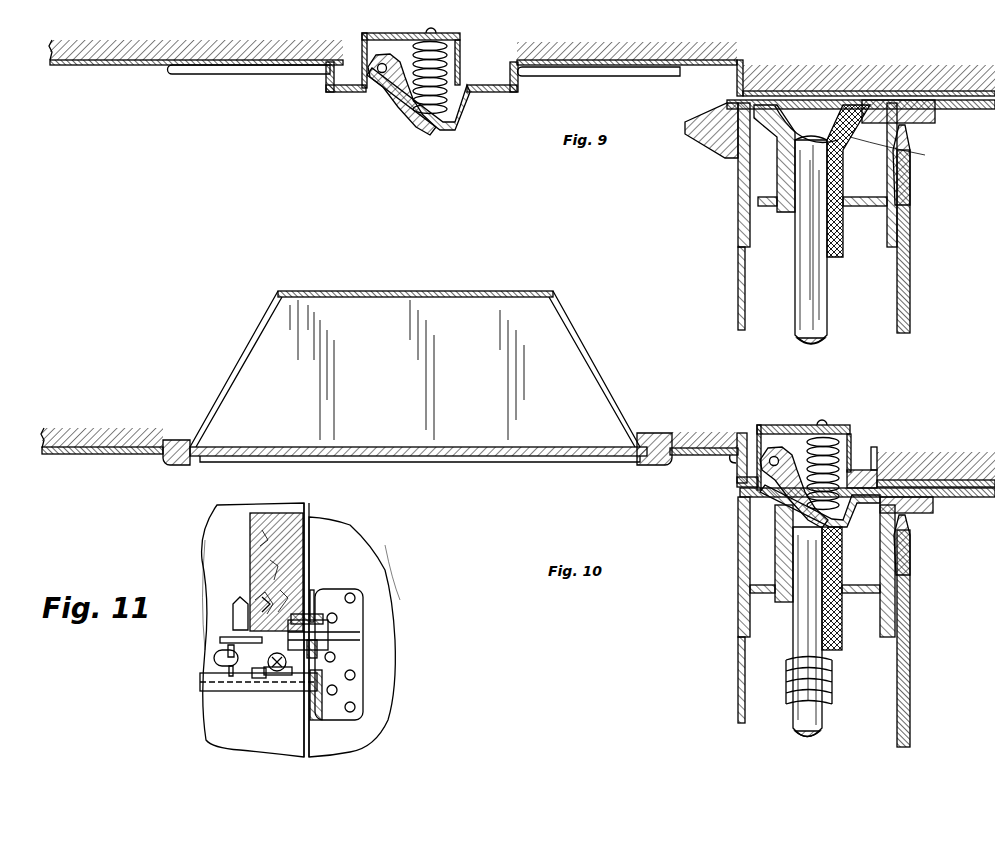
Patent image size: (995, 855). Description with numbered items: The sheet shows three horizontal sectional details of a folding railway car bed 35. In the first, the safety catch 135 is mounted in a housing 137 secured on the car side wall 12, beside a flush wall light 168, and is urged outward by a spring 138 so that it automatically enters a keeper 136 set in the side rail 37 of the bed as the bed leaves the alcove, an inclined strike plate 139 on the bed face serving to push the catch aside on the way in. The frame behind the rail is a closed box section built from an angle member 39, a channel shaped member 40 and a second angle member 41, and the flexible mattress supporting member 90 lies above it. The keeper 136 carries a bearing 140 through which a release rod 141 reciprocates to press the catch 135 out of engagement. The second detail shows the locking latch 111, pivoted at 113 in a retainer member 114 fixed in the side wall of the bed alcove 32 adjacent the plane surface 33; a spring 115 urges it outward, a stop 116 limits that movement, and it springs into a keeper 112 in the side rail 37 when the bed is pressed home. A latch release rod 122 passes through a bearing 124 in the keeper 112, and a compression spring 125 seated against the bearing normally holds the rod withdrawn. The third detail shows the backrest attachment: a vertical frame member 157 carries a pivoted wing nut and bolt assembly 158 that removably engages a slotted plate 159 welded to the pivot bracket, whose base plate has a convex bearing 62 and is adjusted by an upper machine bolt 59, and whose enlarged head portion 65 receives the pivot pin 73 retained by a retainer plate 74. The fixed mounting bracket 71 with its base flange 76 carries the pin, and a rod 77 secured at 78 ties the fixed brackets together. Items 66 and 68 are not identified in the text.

In FIG. 9, the side wall 12 is at (118, 66).
In FIG. 10, the side wall 12 is at (124, 456).
In FIG. 9, the wall light 168 is at (214, 76).
In FIG. 10, the wall light 168 is at (418, 376).
In FIG. 9, the housing 137 is at (352, 95).
In FIG. 9, the safety catch 135 is at (420, 128).
In FIG. 9, the spring 138 is at (462, 113).
In FIG. 9, the side rail member 37 is at (950, 98).
In FIG. 10, the side rail member 37 is at (738, 493).
In FIG. 9, the second angle member 41 is at (935, 121).
In FIG. 10, the second angle member 41 is at (935, 508).
In FIG. 9, the inclined strike plate 139 is at (722, 152).
In FIG. 9, the bed 35 is at (737, 215).
In FIG. 10, the bed 35 is at (735, 513).
In FIG. 11, the bed 35 is at (212, 558).
In FIG. 9, the angle member 39 is at (778, 166).
In FIG. 10, the angle member 39 is at (775, 550).
In FIG. 9, the channel shaped member 40 is at (868, 206).
In FIG. 10, the channel shaped member 40 is at (864, 594).
In FIG. 9, the bearing 140 is at (841, 255).
In FIG. 9, the release rod 141 is at (829, 297).
In FIG. 9, the flexible mattress supporting member 90 is at (910, 271).
In FIG. 10, the flexible mattress supporting member 90 is at (910, 596).
In FIG. 9, the keeper 136 is at (910, 156).
In FIG. 10, the pivot 113 is at (766, 456).
In FIG. 10, the retainer member 114 is at (836, 442).
In FIG. 10, the spring 115 is at (850, 450).
In FIG. 10, the latch 111 is at (877, 470).
In FIG. 10, the stop 116 is at (880, 481).
In FIG. 10, the plane surface 33 is at (737, 467).
In FIG. 11, the plane surface 33 is at (388, 596).
In FIG. 10, the bed alcove 32 is at (740, 483).
In FIG. 11, the bed alcove 32 is at (310, 535).
In FIG. 10, the keeper 112 is at (863, 516).
In FIG. 10, the latch release rod 122 is at (824, 716).
In FIG. 10, the bearing 124 is at (838, 644).
In FIG. 10, the compression spring 125 is at (833, 692).
In FIG. 11, the vertical frame member 157 is at (252, 532).
In FIG. 11, the upper machine bolt 59 is at (262, 598).
In FIG. 11, the convex bearing 62 is at (239, 606).
In FIG. 11, the enlarged head portion 65 is at (306, 614).
In FIG. 11, the fixed mounting bracket 71 is at (316, 600).
In FIG. 11, the base flange 76 is at (352, 592).
In FIG. 11, the pivot pin 73 is at (340, 634).
In FIG. 11, the screw 66 is at (318, 655).
In FIG. 11, the rod 77 is at (200, 681).
In FIG. 11, the nut 68 is at (258, 678).
In FIG. 11, the retainer plate 74 is at (275, 676).
In FIG. 11, the rod securing point 78 is at (322, 715).
In FIG. 11, the wing nut and bolt assembly 158 is at (218, 654).
In FIG. 11, the slotted plate 159 is at (222, 638).